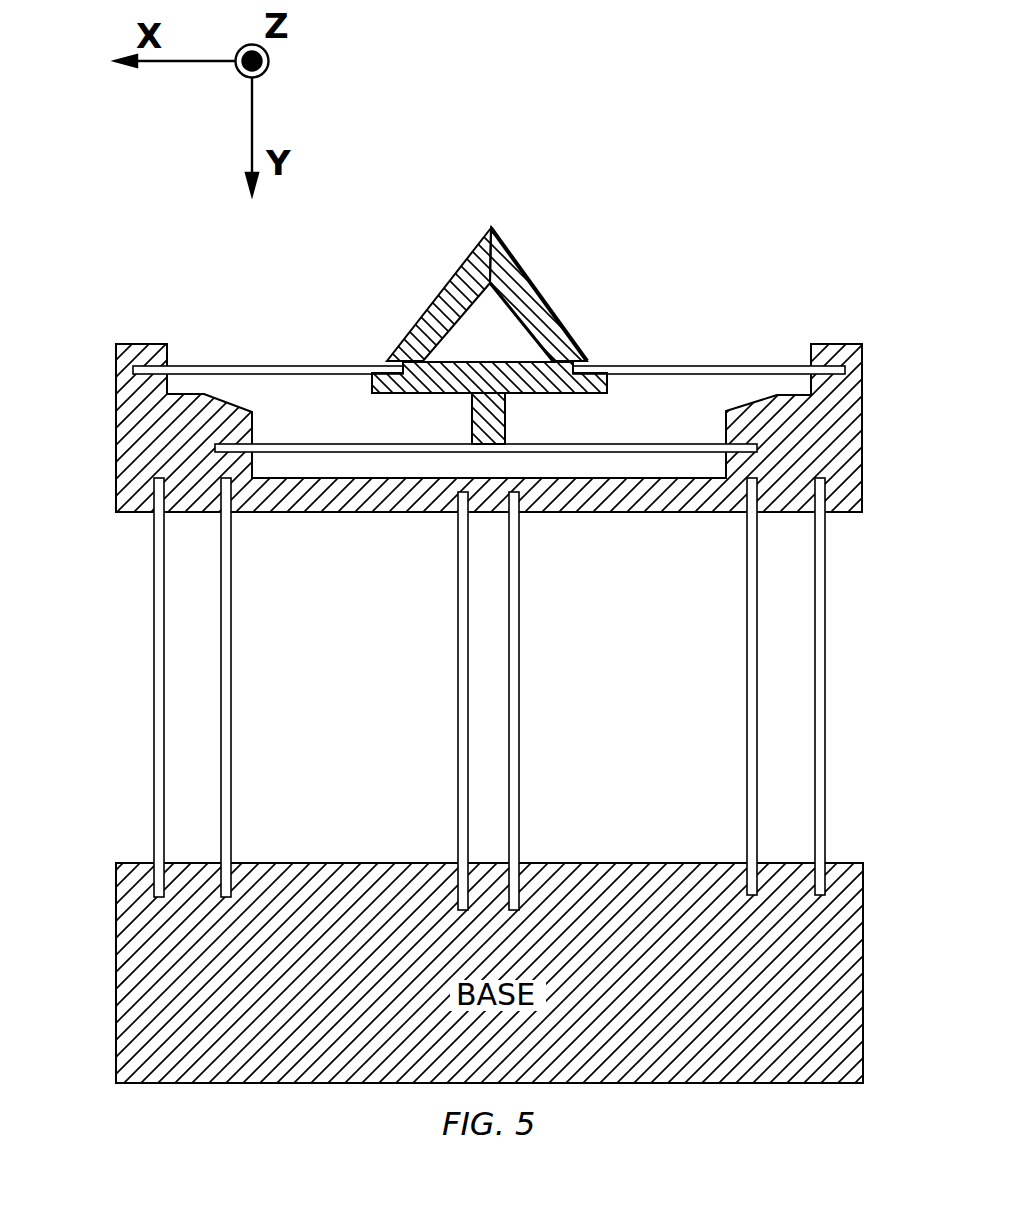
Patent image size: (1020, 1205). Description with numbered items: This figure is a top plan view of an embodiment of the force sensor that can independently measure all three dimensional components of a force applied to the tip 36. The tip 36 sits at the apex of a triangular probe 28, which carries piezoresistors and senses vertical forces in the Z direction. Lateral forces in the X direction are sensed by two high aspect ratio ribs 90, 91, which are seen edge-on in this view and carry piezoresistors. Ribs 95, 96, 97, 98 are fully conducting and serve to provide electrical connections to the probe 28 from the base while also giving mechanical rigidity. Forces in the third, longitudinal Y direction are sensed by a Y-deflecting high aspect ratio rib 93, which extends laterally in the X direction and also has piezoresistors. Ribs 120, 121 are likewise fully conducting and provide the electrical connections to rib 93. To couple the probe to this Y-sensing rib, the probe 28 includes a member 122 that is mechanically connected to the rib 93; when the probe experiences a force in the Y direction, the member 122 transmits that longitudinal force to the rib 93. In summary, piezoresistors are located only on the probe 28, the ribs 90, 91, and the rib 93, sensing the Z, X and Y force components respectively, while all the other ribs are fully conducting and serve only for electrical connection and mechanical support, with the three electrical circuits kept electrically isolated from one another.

The tip 36 is at (492, 221).
The triangular probe 28 is at (533, 290).
The rib 97 is at (295, 363).
The rib 96 is at (687, 365).
The Y-deflecting high aspect ratio rib 93 is at (372, 443).
The member 122 is at (489, 420).
The rib 98 is at (153, 632).
The rib 120 is at (231, 622).
The high aspect ratio rib 90 is at (458, 662).
The high aspect ratio rib 91 is at (520, 657).
The rib 121 is at (745, 607).
The rib 95 is at (825, 642).